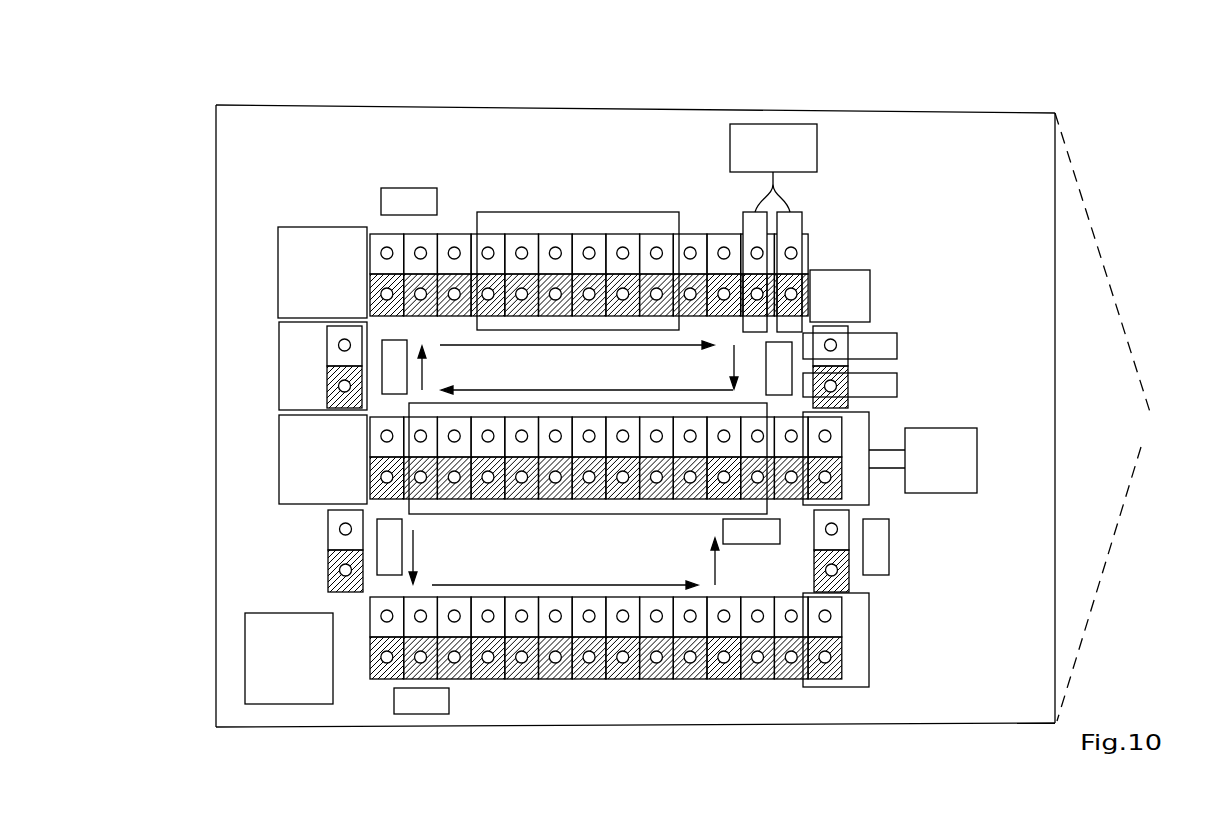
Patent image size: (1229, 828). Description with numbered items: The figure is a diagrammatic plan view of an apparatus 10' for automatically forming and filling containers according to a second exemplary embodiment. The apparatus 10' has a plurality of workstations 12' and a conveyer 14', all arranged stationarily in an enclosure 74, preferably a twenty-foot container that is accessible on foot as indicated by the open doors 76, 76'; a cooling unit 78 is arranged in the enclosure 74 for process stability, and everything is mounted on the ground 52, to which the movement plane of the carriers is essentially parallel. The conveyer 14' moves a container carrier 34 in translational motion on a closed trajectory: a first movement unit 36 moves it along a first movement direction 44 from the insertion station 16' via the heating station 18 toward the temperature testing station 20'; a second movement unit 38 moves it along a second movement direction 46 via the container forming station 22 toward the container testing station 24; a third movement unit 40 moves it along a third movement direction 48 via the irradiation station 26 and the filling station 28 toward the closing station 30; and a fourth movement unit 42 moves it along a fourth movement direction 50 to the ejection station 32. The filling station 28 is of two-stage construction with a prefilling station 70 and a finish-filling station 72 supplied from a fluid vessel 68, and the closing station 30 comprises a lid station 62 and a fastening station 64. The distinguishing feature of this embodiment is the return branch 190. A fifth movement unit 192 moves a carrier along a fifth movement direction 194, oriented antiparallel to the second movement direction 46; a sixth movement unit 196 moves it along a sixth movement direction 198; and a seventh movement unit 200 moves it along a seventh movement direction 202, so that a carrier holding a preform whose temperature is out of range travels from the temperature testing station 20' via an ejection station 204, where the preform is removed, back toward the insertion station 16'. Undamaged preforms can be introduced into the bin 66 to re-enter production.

The apparatus 10' is at (635, 423).
The workstations 12' is at (257, 561).
The conveyer 14' is at (436, 175).
The insertion station 16' is at (889, 445).
The heating station 18 is at (557, 514).
The temperature testing station 20' is at (265, 459).
The container forming station 22 is at (278, 355).
The container testing station 24 is at (330, 226).
The irradiation station 26 is at (622, 241).
The filling station 28 is at (795, 190).
The closing station 30 is at (899, 320).
The ejection station 32 is at (898, 380).
The container carrier 34 is at (455, 230).
The first movement unit 36 is at (760, 544).
The second movement unit 38 is at (394, 340).
The third movement unit 40 is at (398, 188).
The fourth movement unit 42 is at (766, 375).
The first movement direction 44 is at (510, 390).
The second movement direction 46 is at (423, 370).
The third movement direction 48 is at (588, 345).
The fourth movement direction 50 is at (732, 370).
The ground 52 is at (975, 714).
The lid station 62 is at (872, 276).
The fastening station 64 is at (898, 341).
The bin 66 is at (955, 493).
The fluid vessel 68 is at (817, 144).
The prefilling station 70 is at (743, 223).
The finish-filling station 72 is at (803, 220).
The enclosure 74 is at (555, 107).
The open door 76 is at (1111, 262).
The open door 76' is at (1120, 584).
The cooling unit 78 is at (290, 705).
The return branch 190 is at (628, 710).
The fifth movement unit 192 is at (403, 545).
The fifth movement direction 194 is at (420, 558).
The sixth movement unit 196 is at (449, 702).
The sixth movement direction 198 is at (522, 584).
The seventh movement unit 200 is at (890, 546).
The seventh movement direction 202 is at (716, 556).
The ejection station 204 is at (870, 633).